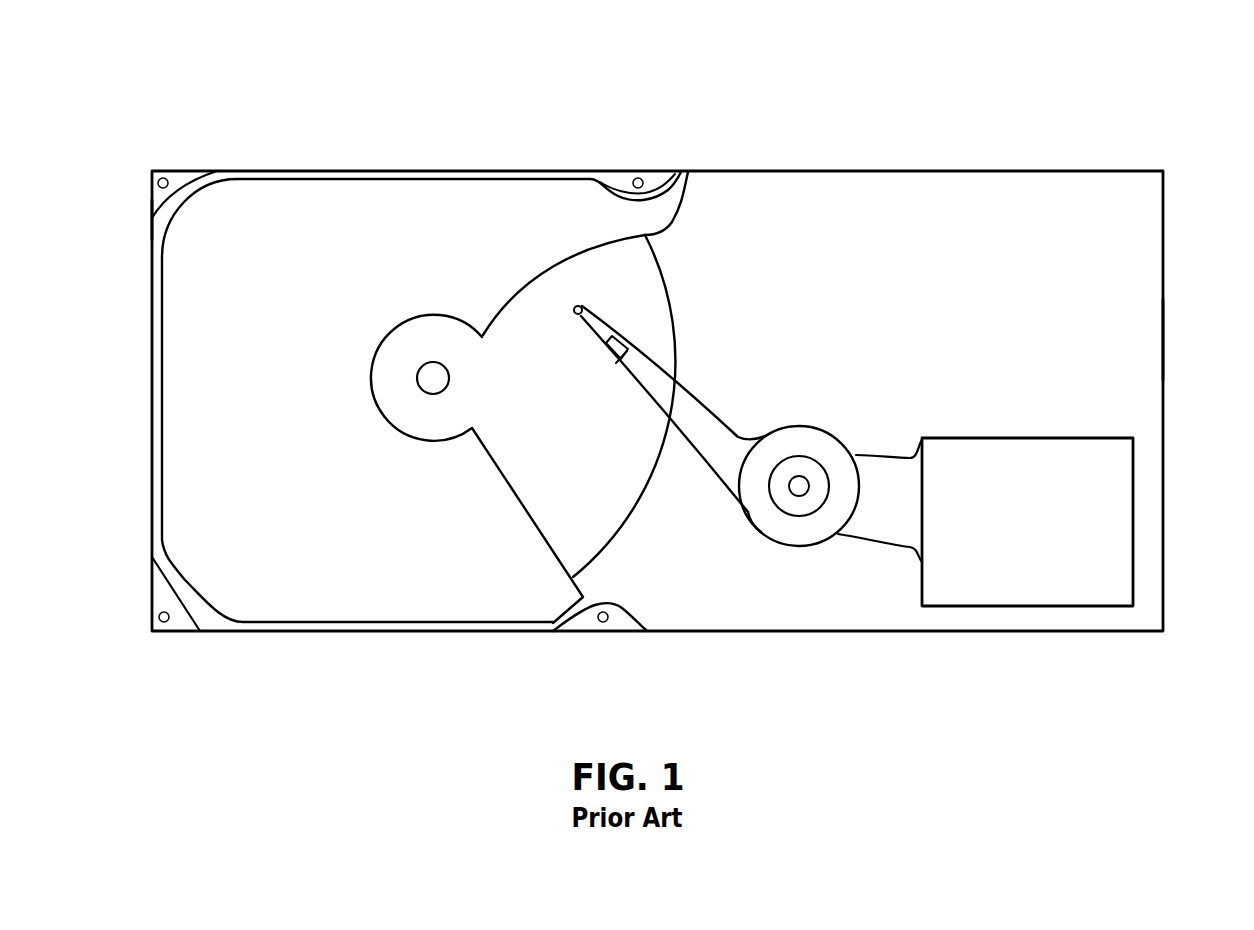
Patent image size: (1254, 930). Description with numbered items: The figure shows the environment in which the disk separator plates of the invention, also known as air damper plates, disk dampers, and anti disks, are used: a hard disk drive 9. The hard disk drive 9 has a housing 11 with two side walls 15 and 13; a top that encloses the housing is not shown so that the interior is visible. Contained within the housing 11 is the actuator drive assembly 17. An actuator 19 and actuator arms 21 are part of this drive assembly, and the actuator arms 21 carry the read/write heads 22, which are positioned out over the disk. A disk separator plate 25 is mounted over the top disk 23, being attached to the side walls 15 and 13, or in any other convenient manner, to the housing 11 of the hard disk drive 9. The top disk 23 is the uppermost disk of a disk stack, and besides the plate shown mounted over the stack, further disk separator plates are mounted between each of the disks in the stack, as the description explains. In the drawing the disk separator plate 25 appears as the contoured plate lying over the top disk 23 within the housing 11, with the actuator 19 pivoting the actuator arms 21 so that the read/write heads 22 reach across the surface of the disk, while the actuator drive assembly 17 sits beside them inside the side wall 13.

The hard disk drive 9 is at (825, 121).
The housing 11 is at (217, 170).
The side wall 13 is at (1152, 343).
The side wall 15 is at (156, 241).
The actuator drive assembly 17 is at (1135, 516).
The actuator 19 is at (836, 441).
The actuator arms 21 is at (695, 408).
The read/write heads 22 is at (582, 307).
The top disk 23 is at (660, 266).
The disk separator plate 25 is at (515, 190).